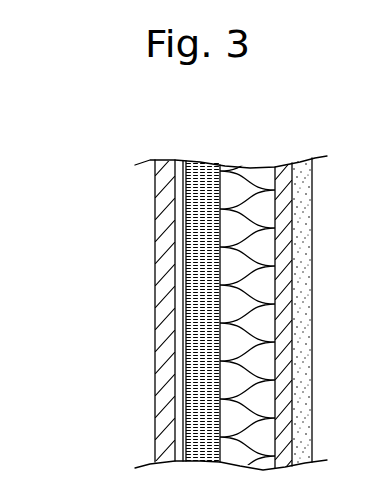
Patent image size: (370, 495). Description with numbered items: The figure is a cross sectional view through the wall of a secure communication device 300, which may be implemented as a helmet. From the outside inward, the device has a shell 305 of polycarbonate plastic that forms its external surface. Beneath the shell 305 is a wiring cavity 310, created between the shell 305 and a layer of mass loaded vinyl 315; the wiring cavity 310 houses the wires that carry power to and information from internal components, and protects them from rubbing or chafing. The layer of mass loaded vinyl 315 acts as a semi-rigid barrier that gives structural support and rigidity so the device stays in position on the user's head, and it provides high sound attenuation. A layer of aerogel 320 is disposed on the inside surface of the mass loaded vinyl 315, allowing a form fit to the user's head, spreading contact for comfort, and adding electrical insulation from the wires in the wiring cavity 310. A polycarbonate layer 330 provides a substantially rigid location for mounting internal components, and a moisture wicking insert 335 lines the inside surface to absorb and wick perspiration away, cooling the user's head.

The secure communication device 300 is at (60, 138).
The shell 305 is at (158, 173).
The wiring cavity 310 is at (183, 203).
The layer of mass loaded vinyl 315 is at (195, 232).
The layer of aerogel 320 is at (232, 270).
The polycarbonate layer 330 is at (220, 308).
The moisture wicking insert 335 is at (298, 367).